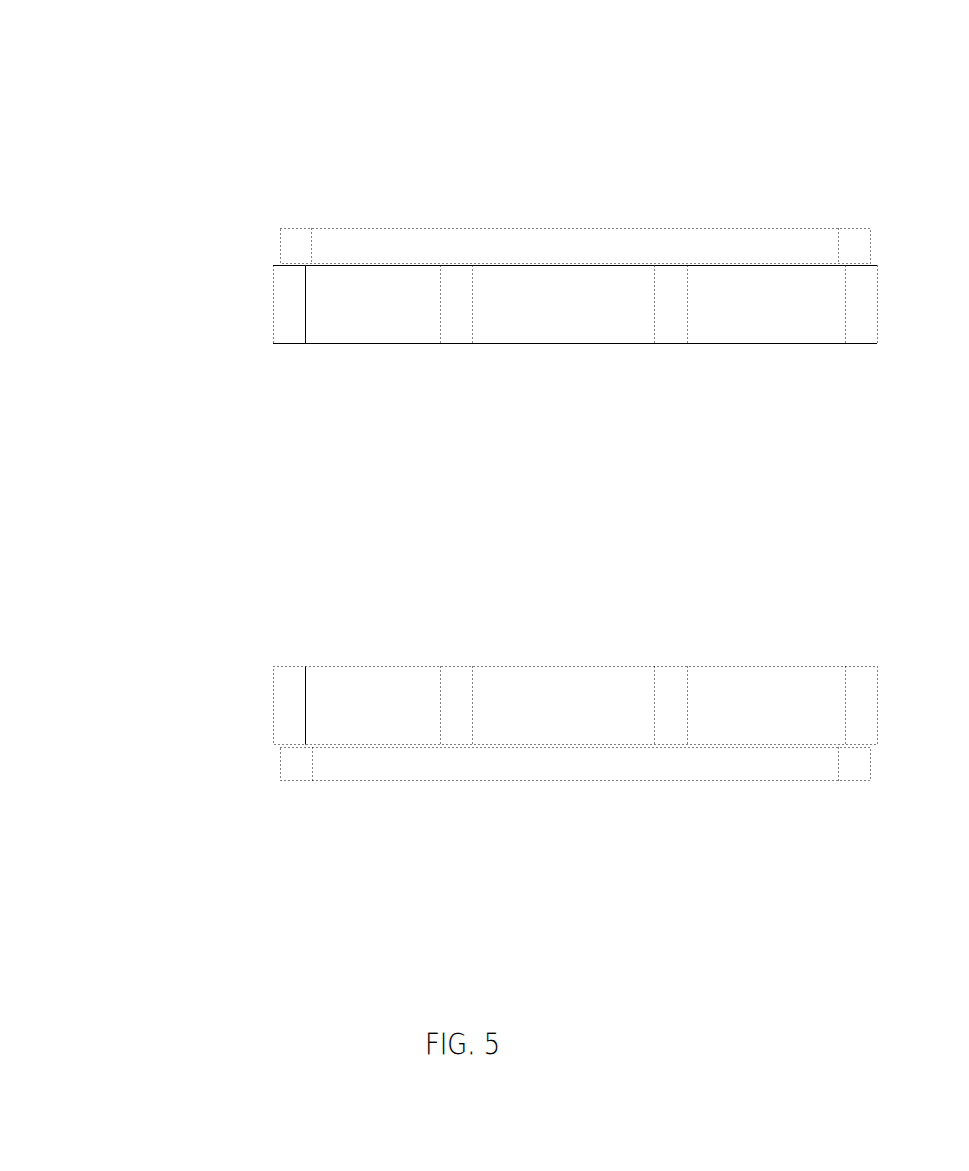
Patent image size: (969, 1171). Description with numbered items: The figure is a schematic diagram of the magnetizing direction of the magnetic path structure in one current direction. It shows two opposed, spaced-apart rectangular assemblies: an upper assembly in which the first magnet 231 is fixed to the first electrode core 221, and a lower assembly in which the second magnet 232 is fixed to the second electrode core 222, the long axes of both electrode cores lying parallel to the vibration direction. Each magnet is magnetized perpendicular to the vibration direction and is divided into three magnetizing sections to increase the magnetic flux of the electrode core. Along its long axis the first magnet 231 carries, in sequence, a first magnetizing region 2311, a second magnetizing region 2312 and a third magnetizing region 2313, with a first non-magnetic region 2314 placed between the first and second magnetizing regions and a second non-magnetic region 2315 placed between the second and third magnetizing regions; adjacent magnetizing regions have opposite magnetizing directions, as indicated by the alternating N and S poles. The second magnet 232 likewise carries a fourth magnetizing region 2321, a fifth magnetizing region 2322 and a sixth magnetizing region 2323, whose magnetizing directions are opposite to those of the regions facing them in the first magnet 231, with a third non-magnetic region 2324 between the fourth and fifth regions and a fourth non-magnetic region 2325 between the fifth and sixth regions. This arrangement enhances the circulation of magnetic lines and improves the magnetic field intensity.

The first electrode core 221 is at (350, 252).
The second electrode core 222 is at (348, 772).
The first magnet 231 is at (867, 112).
The first magnetizing region 2311 is at (380, 297).
The second magnetizing region 2312 is at (605, 297).
The third magnetizing region 2313 is at (810, 297).
The first non-magnetic region 2314 is at (457, 330).
The second non-magnetic region 2315 is at (677, 330).
The second magnet 232 is at (765, 913).
The fourth magnetizing region 2321 is at (402, 716).
The fifth magnetizing region 2322 is at (627, 715).
The sixth magnetizing region 2323 is at (812, 716).
The third non-magnetic region 2324 is at (452, 682).
The fourth non-magnetic region 2325 is at (672, 682).